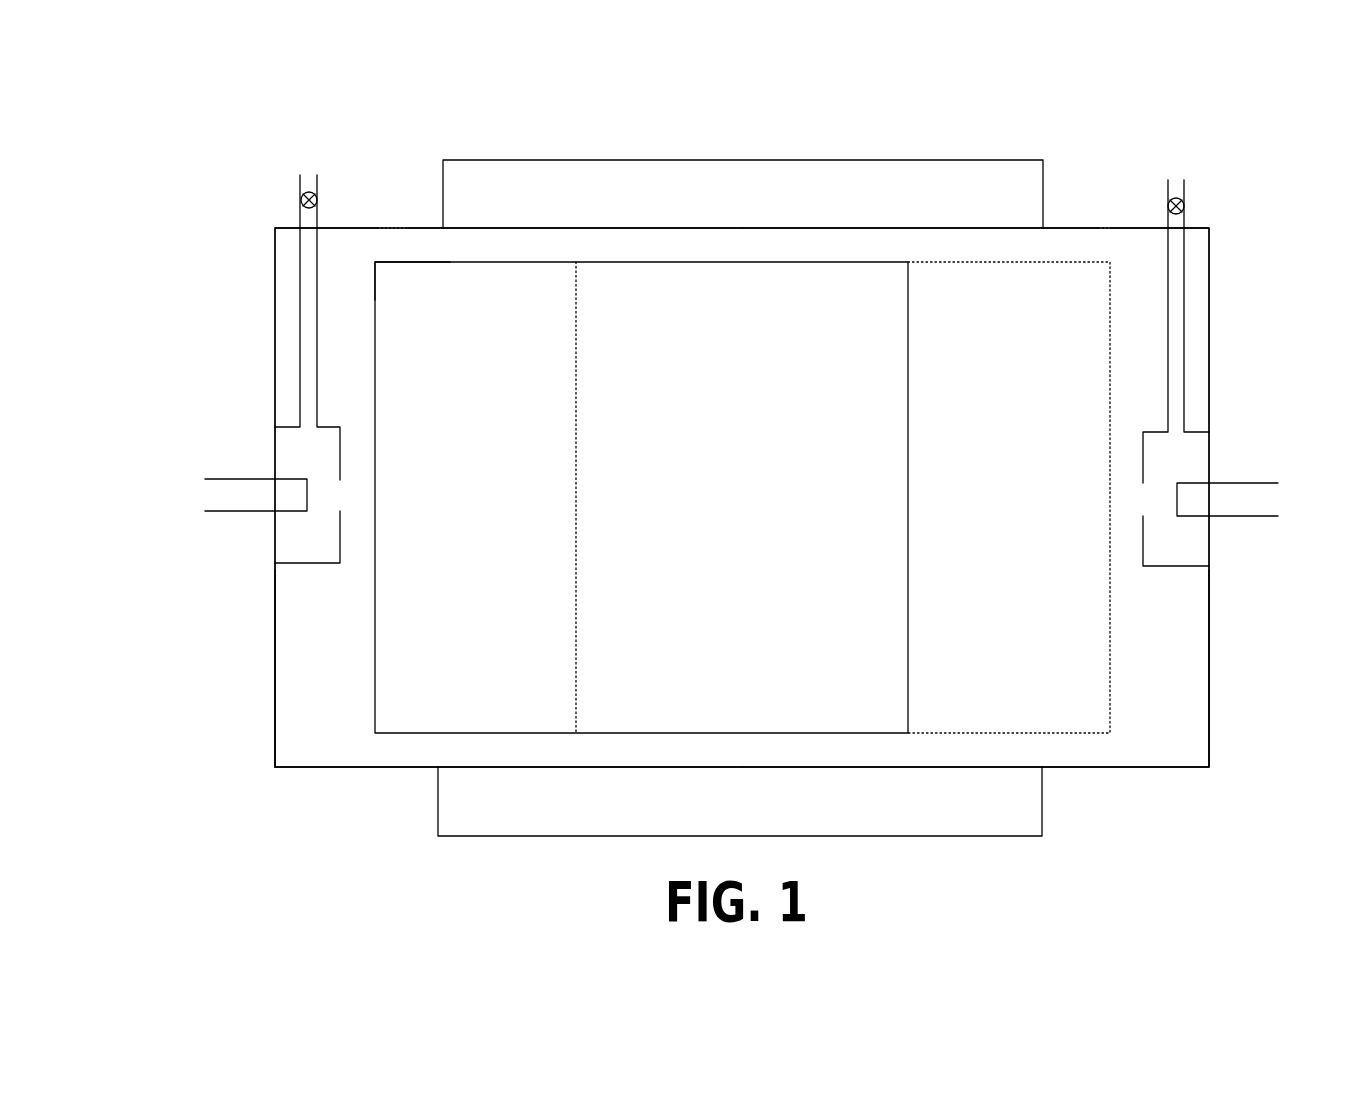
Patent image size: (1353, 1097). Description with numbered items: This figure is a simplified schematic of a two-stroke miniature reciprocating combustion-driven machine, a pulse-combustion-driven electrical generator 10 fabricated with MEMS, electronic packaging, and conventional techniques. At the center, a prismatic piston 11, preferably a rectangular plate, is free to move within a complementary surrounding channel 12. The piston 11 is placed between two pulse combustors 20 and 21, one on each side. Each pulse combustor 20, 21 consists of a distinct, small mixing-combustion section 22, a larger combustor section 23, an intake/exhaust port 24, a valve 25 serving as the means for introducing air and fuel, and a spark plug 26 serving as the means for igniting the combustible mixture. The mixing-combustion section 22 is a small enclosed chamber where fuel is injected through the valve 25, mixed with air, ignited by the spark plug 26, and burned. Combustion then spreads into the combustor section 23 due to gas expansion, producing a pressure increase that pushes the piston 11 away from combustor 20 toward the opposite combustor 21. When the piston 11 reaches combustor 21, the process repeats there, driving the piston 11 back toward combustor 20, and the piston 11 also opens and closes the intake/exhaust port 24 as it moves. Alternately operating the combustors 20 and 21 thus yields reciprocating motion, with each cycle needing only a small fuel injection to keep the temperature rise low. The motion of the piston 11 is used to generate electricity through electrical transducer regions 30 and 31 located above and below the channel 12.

The generator 10 is at (897, 112).
The piston 11 is at (792, 312).
The channel 12 is at (489, 242).
The pulse combustor 20 is at (275, 338).
The pulse combustor 21 is at (1210, 335).
The mixing-combustion section 22 is at (300, 455).
The combustor section 23 is at (315, 632).
The intake/exhaust port 24 is at (389, 222).
The valve 25 is at (307, 170).
The spark plug 26 is at (218, 495).
The electrical transducer region 30 is at (682, 190).
The electrical transducer region 31 is at (987, 805).